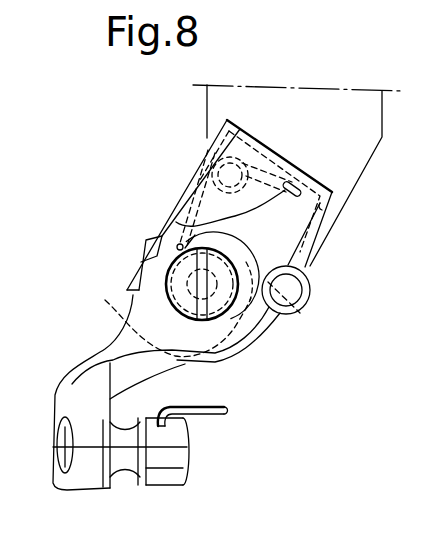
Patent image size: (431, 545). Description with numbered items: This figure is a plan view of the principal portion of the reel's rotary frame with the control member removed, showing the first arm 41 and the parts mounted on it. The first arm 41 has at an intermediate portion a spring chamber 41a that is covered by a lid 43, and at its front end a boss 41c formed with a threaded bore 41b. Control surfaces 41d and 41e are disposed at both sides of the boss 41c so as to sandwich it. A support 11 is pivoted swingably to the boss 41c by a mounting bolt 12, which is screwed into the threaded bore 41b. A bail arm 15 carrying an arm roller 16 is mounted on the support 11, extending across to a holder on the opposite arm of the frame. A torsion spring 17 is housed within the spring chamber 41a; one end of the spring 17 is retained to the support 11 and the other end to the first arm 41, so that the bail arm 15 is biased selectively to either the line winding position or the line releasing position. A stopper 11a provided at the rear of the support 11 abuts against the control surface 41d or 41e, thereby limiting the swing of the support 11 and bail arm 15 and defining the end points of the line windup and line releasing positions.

The support 11 is at (107, 348).
The stopper 11a is at (235, 357).
The mounting bolt 12 is at (138, 250).
The bail arm 15 is at (212, 418).
The arm roller 16 is at (157, 467).
The torsion spring 17 is at (195, 205).
The first arm 41 is at (366, 155).
The spring chamber 41a is at (322, 203).
The threaded bore 41b is at (300, 313).
The boss 41c is at (308, 297).
The control surface 41d is at (262, 335).
The control surface 41e is at (147, 272).
The lid 43 is at (228, 143).